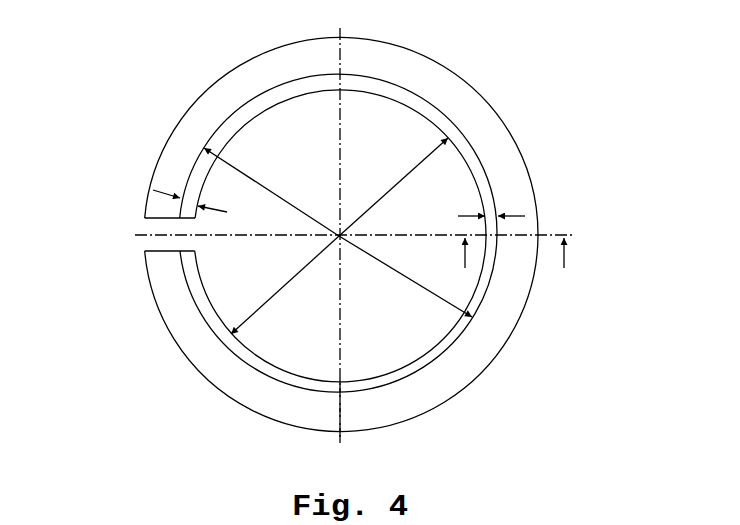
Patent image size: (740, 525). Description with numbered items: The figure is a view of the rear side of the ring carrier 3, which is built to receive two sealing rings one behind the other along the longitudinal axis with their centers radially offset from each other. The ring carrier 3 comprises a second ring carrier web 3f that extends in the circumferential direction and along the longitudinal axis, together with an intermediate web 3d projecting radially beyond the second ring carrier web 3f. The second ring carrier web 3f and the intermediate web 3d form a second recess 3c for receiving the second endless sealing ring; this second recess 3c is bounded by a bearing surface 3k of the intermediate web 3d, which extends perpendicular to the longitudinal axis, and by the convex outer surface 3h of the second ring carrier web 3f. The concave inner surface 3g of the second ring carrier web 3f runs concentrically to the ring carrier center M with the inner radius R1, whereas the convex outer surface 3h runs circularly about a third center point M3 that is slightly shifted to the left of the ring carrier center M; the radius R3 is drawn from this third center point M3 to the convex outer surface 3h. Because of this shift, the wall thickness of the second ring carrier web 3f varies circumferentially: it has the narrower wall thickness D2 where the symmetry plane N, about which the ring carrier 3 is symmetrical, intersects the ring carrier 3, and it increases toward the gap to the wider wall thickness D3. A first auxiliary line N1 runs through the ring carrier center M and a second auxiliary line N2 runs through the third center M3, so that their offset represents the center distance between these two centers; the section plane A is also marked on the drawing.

The ring carrier 3 is at (578, 98).
The second recess 3c is at (470, 102).
The intermediate web 3d is at (522, 314).
The second ring carrier web 3f is at (473, 152).
The concave inner surface 3g is at (392, 100).
The convex outer surface 3h is at (418, 92).
The bearing surface 3k is at (485, 343).
The symmetry plane N is at (146, 234).
The first auxiliary line N1 is at (343, 423).
The second auxiliary line N2 is at (335, 60).
The inner radius R1 is at (415, 164).
The inner layer outer radius R3 is at (258, 183).
The ring carrier center M is at (339, 236).
The third center point M3 is at (339, 236).
The narrower wall thickness D2 is at (497, 212).
The wider wall thickness D3 is at (208, 212).
The section plane A is at (514, 267).